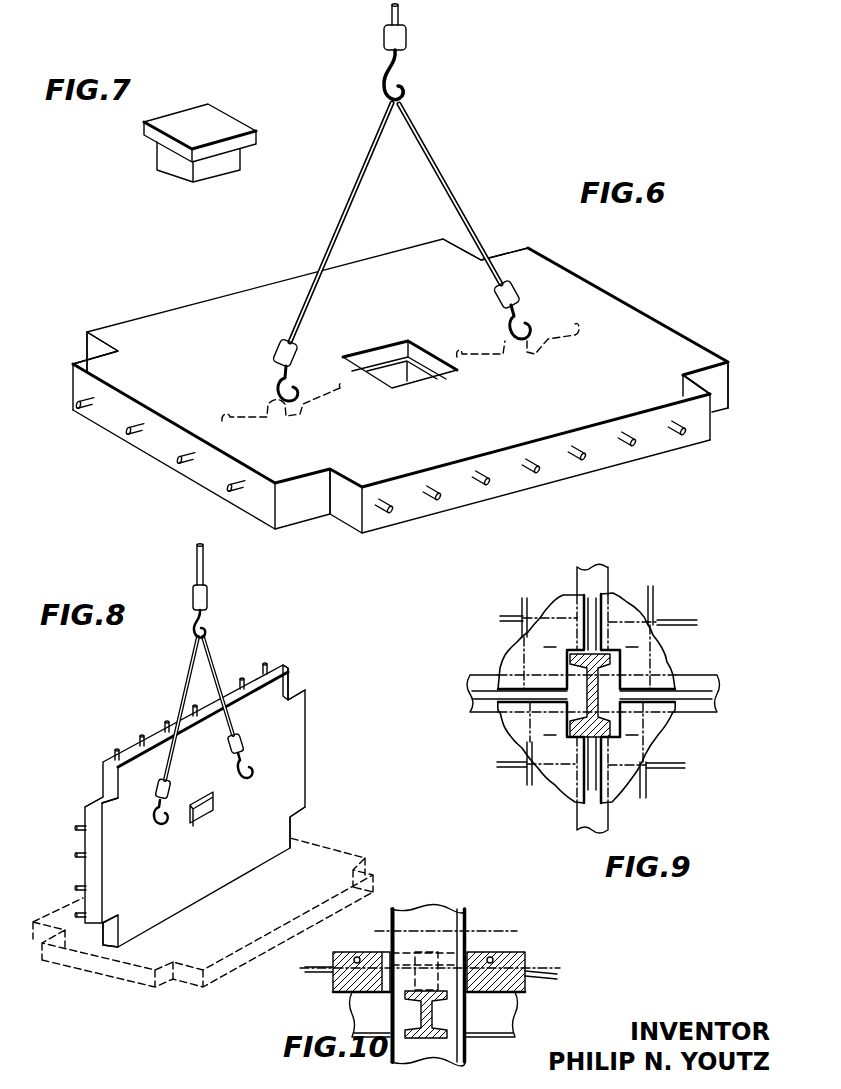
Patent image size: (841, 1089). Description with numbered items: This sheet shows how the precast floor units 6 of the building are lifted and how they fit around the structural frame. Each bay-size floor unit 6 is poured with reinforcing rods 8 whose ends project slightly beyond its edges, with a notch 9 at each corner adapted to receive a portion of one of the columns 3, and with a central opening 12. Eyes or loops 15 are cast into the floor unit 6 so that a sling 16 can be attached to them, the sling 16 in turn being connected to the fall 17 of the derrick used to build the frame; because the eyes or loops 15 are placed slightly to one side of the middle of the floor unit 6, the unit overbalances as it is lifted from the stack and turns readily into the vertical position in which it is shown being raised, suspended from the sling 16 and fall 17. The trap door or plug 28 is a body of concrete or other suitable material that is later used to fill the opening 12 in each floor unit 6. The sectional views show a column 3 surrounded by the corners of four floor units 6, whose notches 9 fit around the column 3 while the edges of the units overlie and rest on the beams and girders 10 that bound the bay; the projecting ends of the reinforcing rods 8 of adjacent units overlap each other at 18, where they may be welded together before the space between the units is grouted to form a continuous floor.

In FIG. 9, the columns 3 is at (575, 660).
In FIG. 10, the columns 3 is at (455, 926).
In FIG. 6, the floor units 6 is at (282, 461).
In FIG. 8, the floor units 6 is at (300, 768).
In FIG. 9, the floor units 6 is at (587, 698).
In FIG. 10, the floor units 6 is at (338, 953).
In FIG. 6, the reinforcing rods 8 is at (137, 431).
In FIG. 8, the reinforcing rods 8 is at (165, 721).
In FIG. 9, the reinforcing rods 8 is at (508, 615).
In FIG. 10, the reinforcing rods 8 is at (315, 975).
In FIG. 6, the notch 9 is at (80, 353).
In FIG. 8, the notch 9 is at (292, 683).
In FIG. 10, the notch 9 is at (379, 923).
In FIG. 9, the beams and girders 10 is at (596, 567).
In FIG. 10, the beams and girders 10 is at (365, 1010).
In FIG. 6, the central opening 12 is at (400, 366).
In FIG. 8, the central opening 12 is at (208, 820).
In FIG. 6, the eyes or loops 15 is at (265, 403).
In FIG. 8, the eyes or loops 15 is at (157, 824).
In FIG. 6, the sling 16 is at (441, 180).
In FIG. 8, the sling 16 is at (188, 672).
In FIG. 6, the fall 17 is at (400, 12).
In FIG. 8, the fall 17 is at (196, 556).
In FIG. 9, the overlapping ends of reinforcing rods 18 is at (591, 608).
In FIG. 10, the overlapping ends of reinforcing rods 18 is at (427, 960).
In FIG. 7, the trap door or plug 28 is at (165, 159).